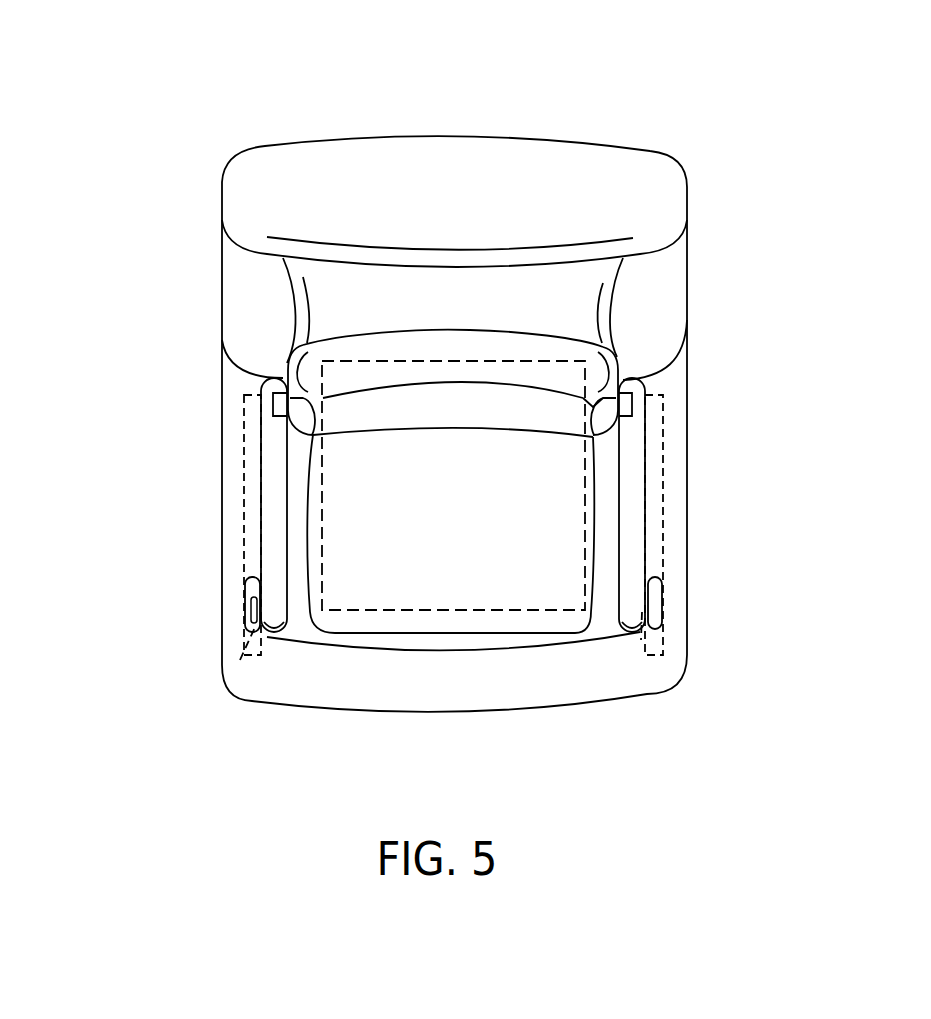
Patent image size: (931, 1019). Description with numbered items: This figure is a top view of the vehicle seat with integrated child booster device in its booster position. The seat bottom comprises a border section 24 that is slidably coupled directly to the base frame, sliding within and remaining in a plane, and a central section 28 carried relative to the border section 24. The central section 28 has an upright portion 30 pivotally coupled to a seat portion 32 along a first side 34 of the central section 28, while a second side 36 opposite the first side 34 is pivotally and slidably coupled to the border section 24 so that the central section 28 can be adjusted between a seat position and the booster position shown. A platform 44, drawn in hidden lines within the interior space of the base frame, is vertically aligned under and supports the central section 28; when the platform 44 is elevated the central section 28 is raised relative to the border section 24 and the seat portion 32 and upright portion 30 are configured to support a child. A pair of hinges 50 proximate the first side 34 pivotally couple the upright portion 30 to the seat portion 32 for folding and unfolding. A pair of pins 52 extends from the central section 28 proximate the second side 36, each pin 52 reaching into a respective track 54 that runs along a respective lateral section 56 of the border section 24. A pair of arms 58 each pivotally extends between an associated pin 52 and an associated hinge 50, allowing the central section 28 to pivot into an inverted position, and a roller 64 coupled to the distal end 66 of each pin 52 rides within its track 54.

The border section 24 is at (362, 687).
The central section 28 is at (388, 432).
The upright portion 30 is at (469, 347).
The seat portion 32 is at (477, 623).
The first side 34 is at (418, 240).
The second side 36 is at (337, 657).
The platform 44 is at (537, 372).
The hinges 50 is at (267, 399).
The pins 52 is at (238, 662).
The track 54 is at (243, 455).
The lateral section 56 is at (233, 430).
The arms 58 is at (278, 630).
The rollers 64 is at (245, 602).
The distal end 66 is at (250, 618).